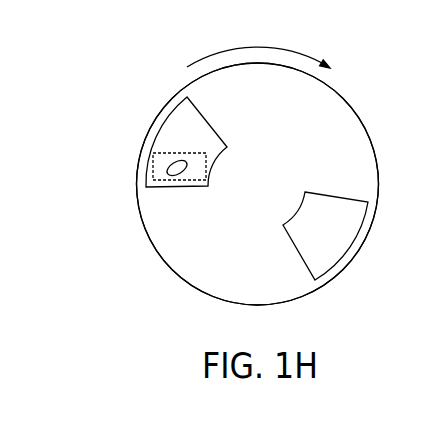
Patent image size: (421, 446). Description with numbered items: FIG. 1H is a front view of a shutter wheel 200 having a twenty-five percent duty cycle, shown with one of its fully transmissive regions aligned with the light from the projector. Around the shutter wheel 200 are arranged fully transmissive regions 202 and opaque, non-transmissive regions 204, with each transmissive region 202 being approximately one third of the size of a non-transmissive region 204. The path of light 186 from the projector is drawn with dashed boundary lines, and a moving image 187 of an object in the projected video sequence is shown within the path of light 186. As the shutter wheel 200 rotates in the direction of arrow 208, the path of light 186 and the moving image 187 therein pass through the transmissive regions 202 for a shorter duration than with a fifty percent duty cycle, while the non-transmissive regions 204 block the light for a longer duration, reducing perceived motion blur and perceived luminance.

The shutter wheel 200 is at (178, 285).
The 100% transmissive region 202 is at (179, 124).
The 0% transmissive region 204 is at (322, 103).
The arrow 208 is at (250, 46).
The path of light 186 is at (163, 154).
The moving image 187 is at (184, 176).